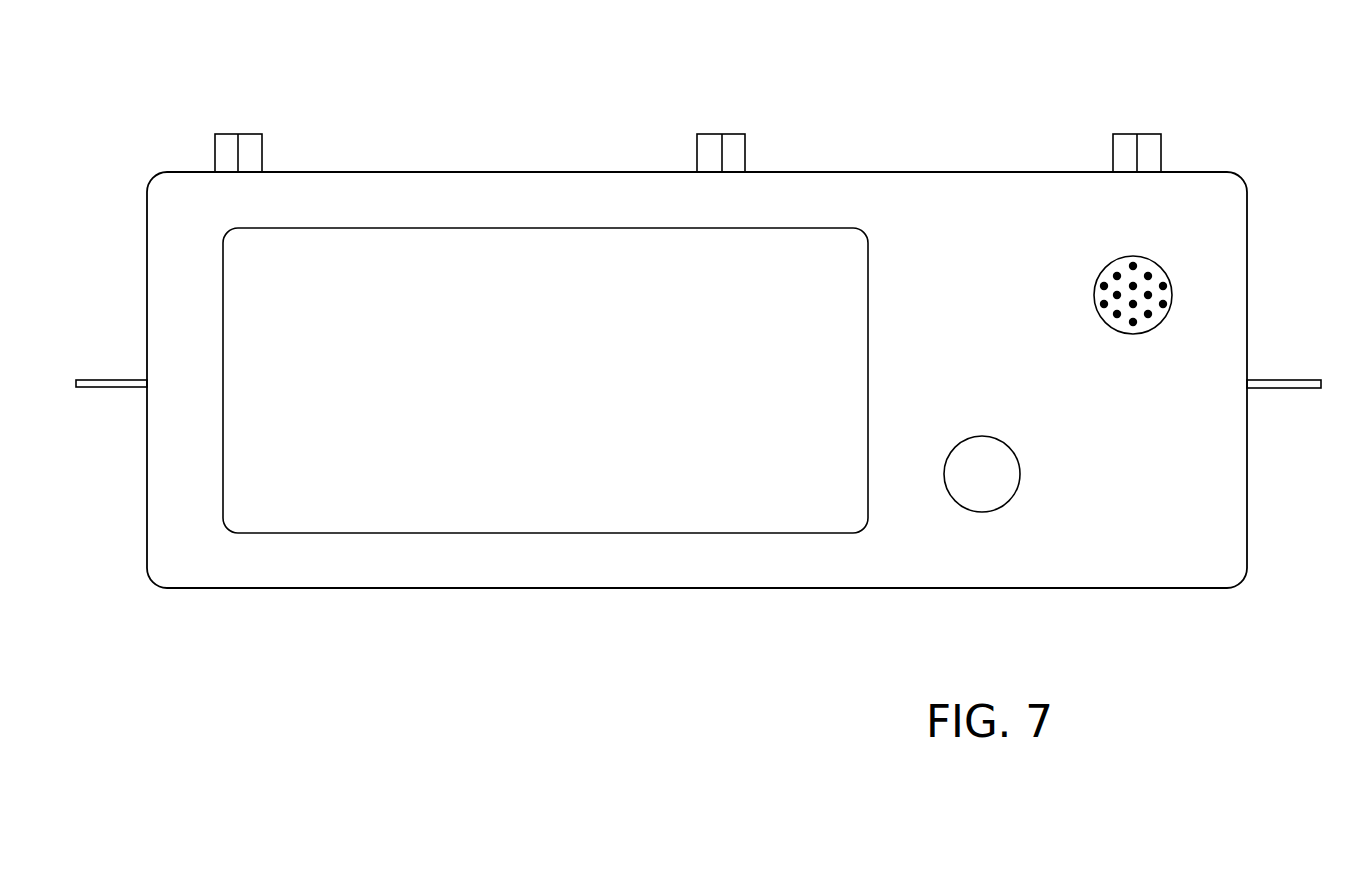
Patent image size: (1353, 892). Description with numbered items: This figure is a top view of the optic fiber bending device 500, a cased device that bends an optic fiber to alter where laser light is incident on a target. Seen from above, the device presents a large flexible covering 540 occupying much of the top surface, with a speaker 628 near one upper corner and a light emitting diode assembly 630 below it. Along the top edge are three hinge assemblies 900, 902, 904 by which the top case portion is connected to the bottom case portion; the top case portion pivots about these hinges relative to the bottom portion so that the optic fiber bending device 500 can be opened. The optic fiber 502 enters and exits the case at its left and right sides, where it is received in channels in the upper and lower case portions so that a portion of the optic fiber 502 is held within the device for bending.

The optic fiber bending device 500 is at (278, 702).
The optic fiber 502 is at (108, 380).
The flexible covering 540 is at (450, 247).
The speaker 628 is at (1143, 266).
The light emitting diode assembly 630 is at (1020, 475).
The hinge assembly 900 is at (262, 152).
The hinge assembly 902 is at (745, 152).
The hinge assembly 904 is at (1161, 152).